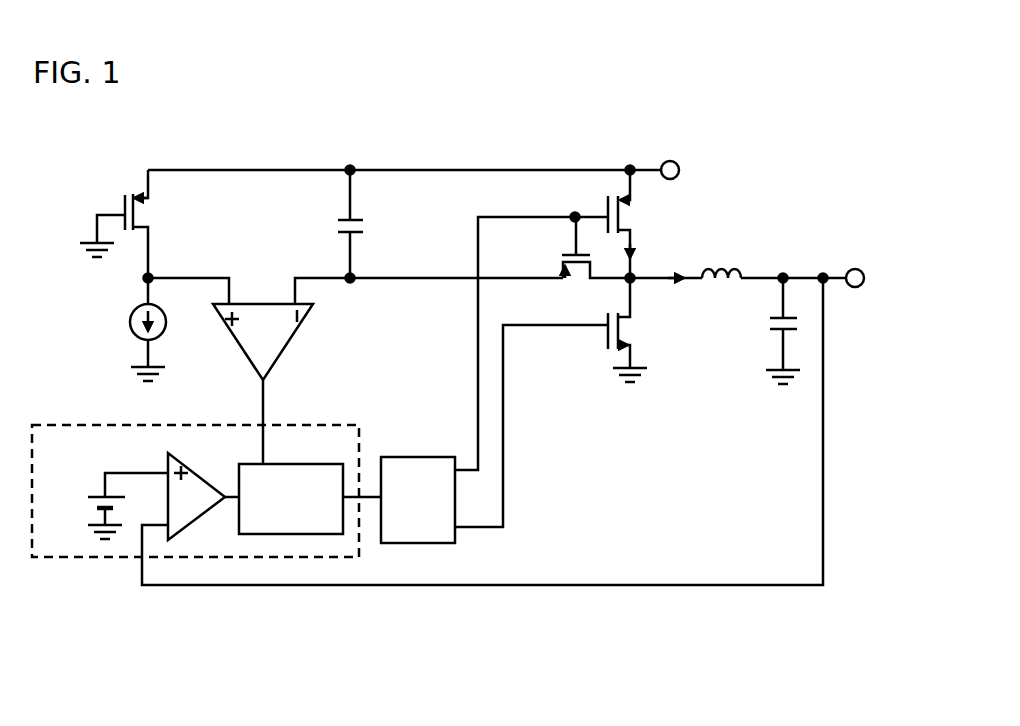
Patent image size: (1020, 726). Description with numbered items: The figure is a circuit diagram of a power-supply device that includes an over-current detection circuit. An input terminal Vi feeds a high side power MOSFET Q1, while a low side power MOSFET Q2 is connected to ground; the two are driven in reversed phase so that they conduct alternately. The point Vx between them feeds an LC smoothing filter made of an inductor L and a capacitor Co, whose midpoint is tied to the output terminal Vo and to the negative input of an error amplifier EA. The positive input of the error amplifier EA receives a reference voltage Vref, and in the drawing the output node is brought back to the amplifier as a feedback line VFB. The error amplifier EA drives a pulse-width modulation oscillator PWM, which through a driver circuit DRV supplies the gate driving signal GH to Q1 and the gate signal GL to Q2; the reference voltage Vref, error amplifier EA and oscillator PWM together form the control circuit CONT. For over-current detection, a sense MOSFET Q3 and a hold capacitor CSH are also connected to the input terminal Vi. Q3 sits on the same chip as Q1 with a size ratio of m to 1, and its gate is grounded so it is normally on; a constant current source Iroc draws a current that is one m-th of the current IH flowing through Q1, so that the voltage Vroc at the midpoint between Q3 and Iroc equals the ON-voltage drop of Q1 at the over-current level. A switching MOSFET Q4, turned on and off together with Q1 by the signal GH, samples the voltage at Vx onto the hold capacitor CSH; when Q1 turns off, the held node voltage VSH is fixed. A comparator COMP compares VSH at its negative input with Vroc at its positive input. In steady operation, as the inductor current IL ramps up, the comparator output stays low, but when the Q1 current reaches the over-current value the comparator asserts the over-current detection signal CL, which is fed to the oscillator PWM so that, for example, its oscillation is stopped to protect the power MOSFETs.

The high side power MOSFET Q1 is at (638, 224).
The low side power MOSFET Q2 is at (623, 319).
The sense MOSFET Q3 is at (135, 224).
The switching MOSFET Q4 is at (592, 277).
The MOS size ratio unit of sense MOSFET 1 is at (162, 216).
The MOS size ratio factor of high side power MOSFET m is at (650, 212).
The hold capacitor CSH is at (364, 228).
The comparator COMP is at (303, 324).
The control circuit CONT is at (207, 408).
The error amplifier EA is at (193, 469).
The pulse-width modulation oscillator PWM is at (268, 465).
The driver circuit DRV is at (403, 458).
The inductor L is at (737, 265).
The capacitor Co is at (771, 333).
The input terminal Vi is at (680, 164).
The output terminal Vo is at (857, 267).
The point Vx is at (651, 273).
The node voltage of hold capacitor VSH is at (298, 276).
The reference voltage for over-current detection Vroc is at (188, 274).
The constant current source Iroc is at (130, 332).
The reference voltage Vref is at (97, 497).
The feedback voltage line VFB is at (142, 571).
The gate driving signal of high side power MOSFET GH is at (540, 225).
The low-side gate drive signal GL is at (548, 329).
The over-current detection signal CL is at (264, 398).
The current IH is at (616, 252).
The inductor current IL is at (678, 295).